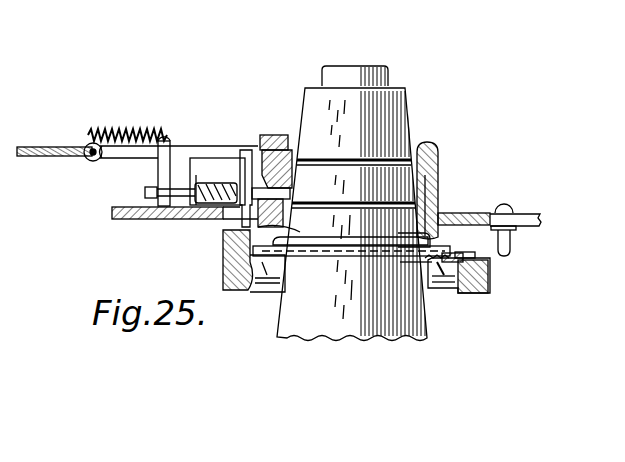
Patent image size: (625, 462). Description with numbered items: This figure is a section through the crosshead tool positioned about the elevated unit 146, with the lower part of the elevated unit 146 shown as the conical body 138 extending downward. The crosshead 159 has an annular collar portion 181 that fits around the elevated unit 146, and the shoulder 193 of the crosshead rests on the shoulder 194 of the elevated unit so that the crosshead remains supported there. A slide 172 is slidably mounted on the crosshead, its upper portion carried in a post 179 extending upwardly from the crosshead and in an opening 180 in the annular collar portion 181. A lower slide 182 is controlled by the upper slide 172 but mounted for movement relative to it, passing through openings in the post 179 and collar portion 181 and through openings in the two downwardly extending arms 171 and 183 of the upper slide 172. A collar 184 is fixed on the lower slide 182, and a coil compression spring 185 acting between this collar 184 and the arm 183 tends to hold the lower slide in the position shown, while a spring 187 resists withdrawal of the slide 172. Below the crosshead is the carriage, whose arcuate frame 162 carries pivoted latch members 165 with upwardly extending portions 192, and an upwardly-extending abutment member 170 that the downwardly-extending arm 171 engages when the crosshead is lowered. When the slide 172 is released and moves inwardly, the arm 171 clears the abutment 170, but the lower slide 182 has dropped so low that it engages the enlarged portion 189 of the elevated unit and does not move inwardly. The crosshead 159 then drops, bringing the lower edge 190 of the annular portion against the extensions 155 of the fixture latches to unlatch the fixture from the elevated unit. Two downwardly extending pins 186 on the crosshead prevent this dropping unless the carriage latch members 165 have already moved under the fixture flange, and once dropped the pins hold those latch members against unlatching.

The spindle 138 is at (396, 337).
The elevated unit 146 is at (412, 122).
The extensions 155 is at (424, 270).
The crosshead 159 is at (440, 233).
The arcuate frame 162 is at (446, 280).
The latch members 165 is at (490, 266).
The abutment member 170 is at (226, 235).
The downwardly-extending arm 171 is at (242, 160).
The slide 172 is at (197, 146).
The post 179 is at (160, 167).
The opening 180 is at (268, 150).
The annular collar portion 181 is at (254, 188).
The lower slide 182 is at (158, 190).
The downwardly extending arm 183 is at (185, 146).
The collar 184 is at (217, 183).
The coil compression spring 185 is at (207, 186).
The pins 186 is at (512, 240).
The spring 187 is at (120, 133).
The enlarged portion 189 is at (450, 213).
The lower edge 190 is at (478, 213).
The upwardly extending portions 192 is at (488, 284).
The shoulder 193 is at (437, 152).
The shoulder 194 is at (438, 185).